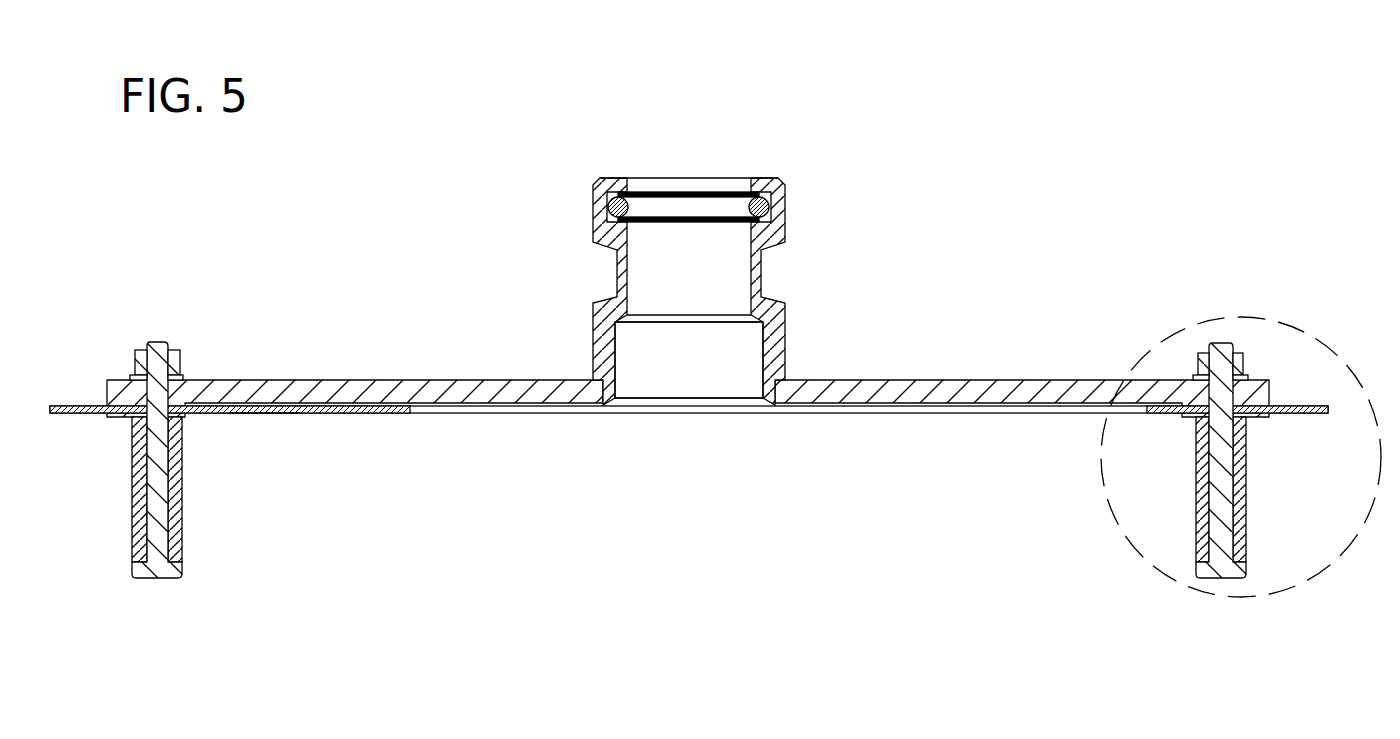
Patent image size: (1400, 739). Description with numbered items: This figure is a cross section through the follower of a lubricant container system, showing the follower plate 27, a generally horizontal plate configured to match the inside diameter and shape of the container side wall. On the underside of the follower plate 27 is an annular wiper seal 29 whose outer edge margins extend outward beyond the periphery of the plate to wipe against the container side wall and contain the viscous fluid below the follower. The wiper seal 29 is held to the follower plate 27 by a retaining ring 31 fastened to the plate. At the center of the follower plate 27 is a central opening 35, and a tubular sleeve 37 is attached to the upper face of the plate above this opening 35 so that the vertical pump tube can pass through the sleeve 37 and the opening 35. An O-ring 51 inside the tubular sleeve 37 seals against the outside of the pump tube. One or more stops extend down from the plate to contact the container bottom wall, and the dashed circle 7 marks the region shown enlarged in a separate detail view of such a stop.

The sensor assembly 7 is at (1352, 563).
The follower plate 27 is at (310, 380).
The wiper seal 29 is at (78, 413).
The retaining ring 31 is at (252, 416).
The central opening 35 is at (699, 379).
The tubular sleeve 37 is at (786, 231).
The O-ring 51 is at (612, 201).